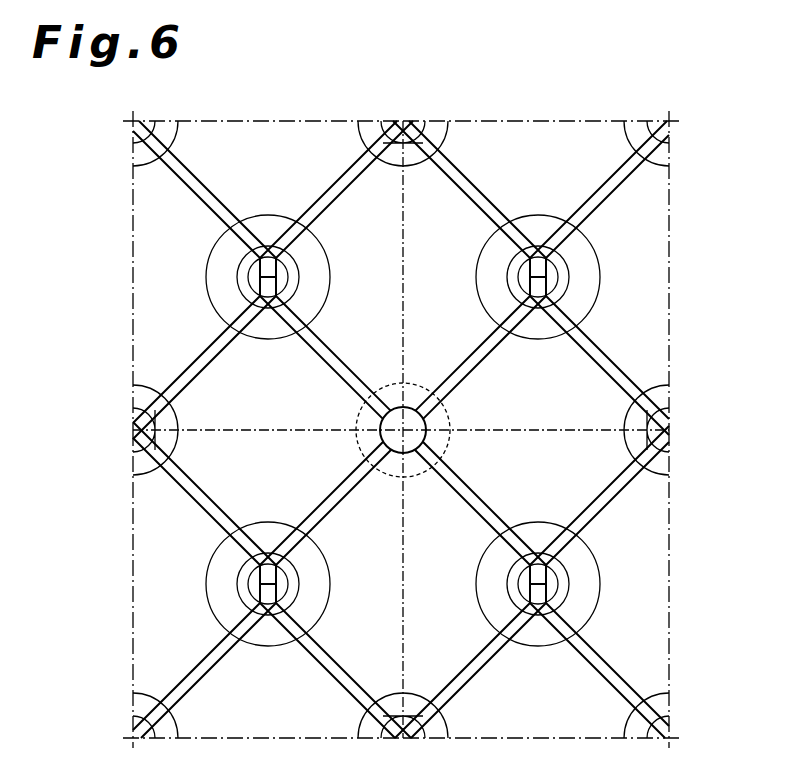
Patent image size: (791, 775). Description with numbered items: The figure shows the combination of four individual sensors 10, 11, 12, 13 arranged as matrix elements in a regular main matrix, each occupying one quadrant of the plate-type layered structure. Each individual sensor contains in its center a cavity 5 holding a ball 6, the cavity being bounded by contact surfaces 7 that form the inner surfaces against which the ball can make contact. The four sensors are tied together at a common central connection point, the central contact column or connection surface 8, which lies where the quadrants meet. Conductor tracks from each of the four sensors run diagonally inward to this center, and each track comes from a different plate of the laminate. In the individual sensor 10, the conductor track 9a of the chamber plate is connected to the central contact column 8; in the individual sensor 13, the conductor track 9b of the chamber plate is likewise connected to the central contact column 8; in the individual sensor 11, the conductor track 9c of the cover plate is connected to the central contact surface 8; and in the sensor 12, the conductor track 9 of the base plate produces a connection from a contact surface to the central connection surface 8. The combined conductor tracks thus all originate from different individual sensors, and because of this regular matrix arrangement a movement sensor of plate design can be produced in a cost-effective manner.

The cavity 5 is at (583, 287).
The ball 6 is at (570, 266).
The inner surfaces of the cavity 7 is at (590, 243).
The connection contact of the base plate 8 is at (383, 423).
The conductor tracks of the base plate 9 is at (470, 488).
The conductor tracks of the chamber plate 9a is at (337, 352).
The conductor tracks of the chamber plate 9b is at (474, 352).
The conductor tracks of the cover plate 9c is at (333, 498).
The individual sensor 10 is at (153, 240).
The individual sensor 11 is at (155, 657).
The individual sensor 12 is at (645, 605).
The individual sensor 13 is at (643, 343).